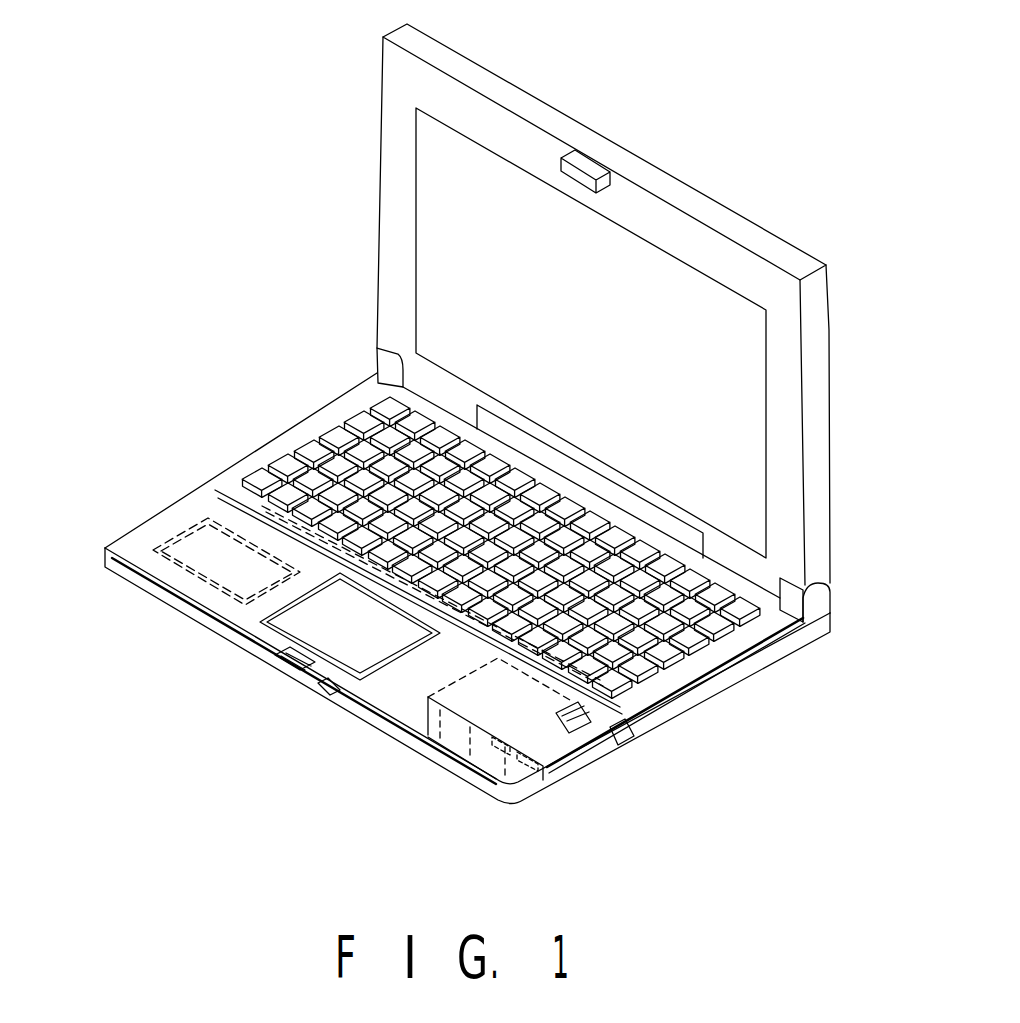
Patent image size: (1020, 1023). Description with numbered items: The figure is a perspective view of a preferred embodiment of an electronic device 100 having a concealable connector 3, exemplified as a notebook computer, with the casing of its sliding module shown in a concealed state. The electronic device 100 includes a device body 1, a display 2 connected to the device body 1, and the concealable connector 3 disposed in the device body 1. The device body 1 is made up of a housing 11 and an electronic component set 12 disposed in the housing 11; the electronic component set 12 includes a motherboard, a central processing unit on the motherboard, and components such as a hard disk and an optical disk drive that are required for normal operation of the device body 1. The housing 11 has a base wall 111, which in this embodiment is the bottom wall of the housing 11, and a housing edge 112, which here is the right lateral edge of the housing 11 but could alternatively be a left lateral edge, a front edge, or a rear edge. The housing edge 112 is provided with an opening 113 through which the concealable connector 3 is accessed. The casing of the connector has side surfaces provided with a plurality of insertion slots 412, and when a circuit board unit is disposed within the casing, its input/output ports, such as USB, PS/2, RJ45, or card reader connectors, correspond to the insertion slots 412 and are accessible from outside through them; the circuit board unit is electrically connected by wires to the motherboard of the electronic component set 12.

The electronic device 100 is at (280, 130).
The device body 1 is at (247, 431).
The display 2 is at (400, 241).
The housing 11 is at (150, 533).
The electronic component set 12 is at (345, 440).
The base wall 111 is at (497, 797).
The housing edge 112 is at (673, 702).
The opening 113 is at (537, 776).
The concealable connector 3 is at (456, 737).
The insertion slots 412 is at (490, 758).